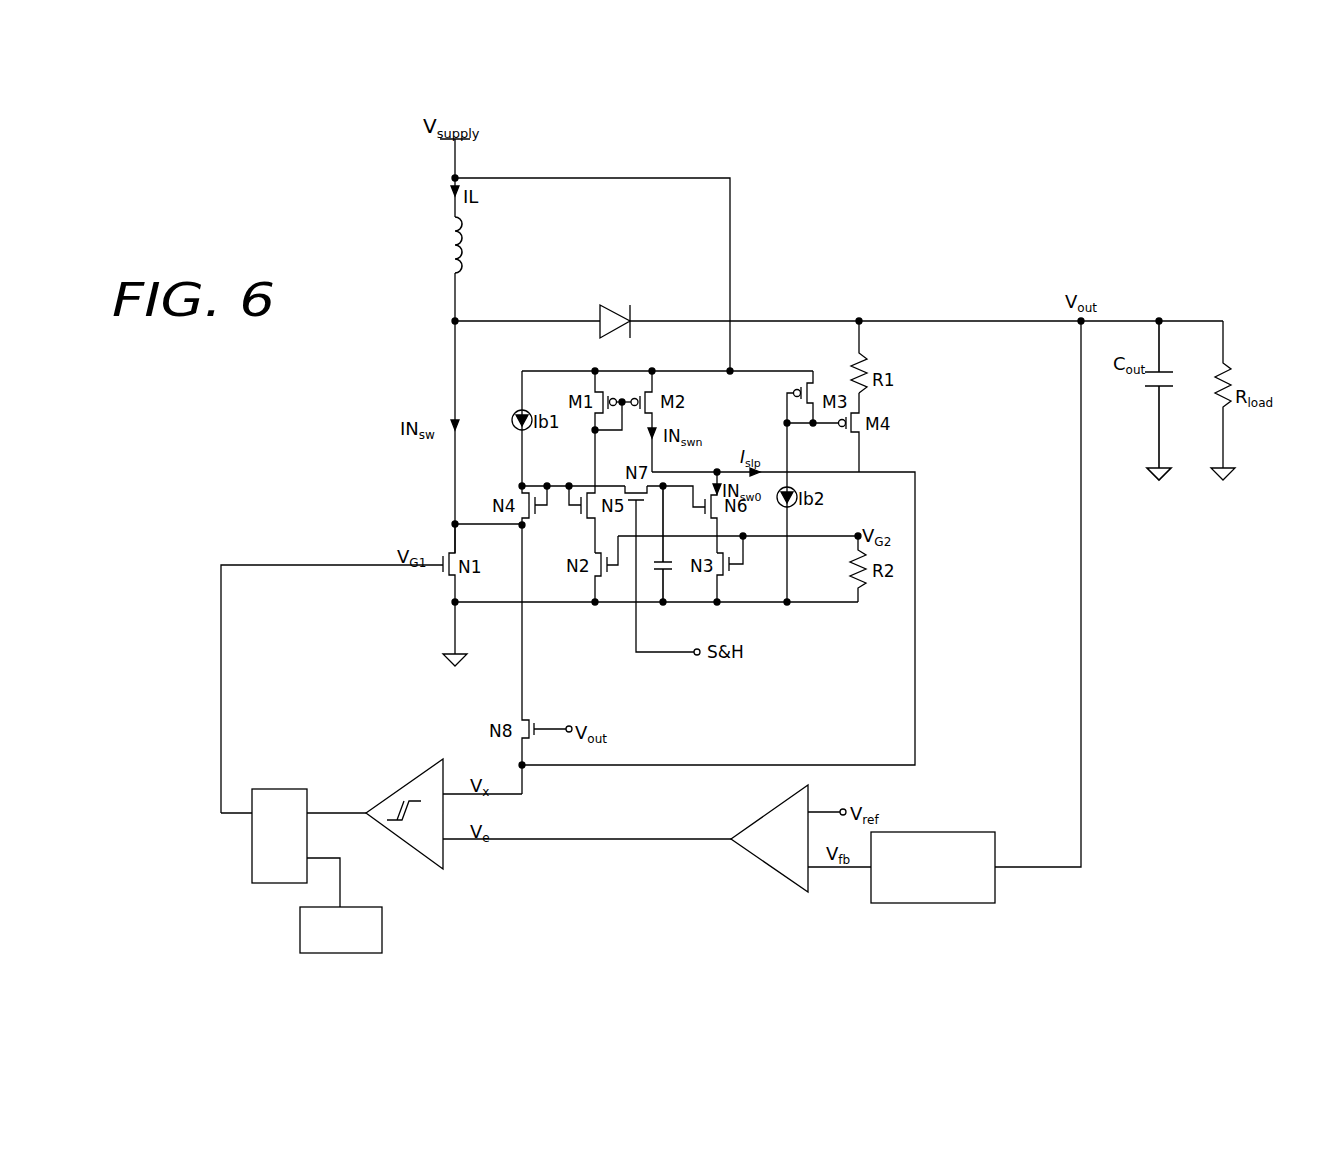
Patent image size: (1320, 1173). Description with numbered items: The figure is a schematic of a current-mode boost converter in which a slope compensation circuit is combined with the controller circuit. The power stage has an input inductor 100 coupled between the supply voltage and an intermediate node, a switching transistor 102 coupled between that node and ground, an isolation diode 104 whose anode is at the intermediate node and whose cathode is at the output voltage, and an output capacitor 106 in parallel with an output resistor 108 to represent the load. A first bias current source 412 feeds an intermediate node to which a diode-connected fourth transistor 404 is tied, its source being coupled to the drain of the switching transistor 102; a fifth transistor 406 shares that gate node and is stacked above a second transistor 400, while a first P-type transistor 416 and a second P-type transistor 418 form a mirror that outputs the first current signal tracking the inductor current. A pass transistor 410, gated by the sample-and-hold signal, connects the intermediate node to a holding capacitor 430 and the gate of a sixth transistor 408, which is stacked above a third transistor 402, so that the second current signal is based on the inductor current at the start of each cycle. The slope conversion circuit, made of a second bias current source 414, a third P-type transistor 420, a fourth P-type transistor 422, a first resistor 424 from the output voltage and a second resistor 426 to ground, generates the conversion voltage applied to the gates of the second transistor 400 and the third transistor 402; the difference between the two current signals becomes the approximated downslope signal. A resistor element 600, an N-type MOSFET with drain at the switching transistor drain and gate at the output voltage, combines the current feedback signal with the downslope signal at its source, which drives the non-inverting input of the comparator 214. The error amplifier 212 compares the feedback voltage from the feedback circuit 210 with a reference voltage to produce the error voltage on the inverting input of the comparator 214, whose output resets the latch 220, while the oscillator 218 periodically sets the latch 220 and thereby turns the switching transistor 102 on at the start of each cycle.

The input inductor 100 is at (469, 246).
The switching transistor 102 is at (451, 552).
The isolation diode 104 is at (613, 305).
The output capacitor 106 is at (1164, 388).
The output resistor 108 is at (1226, 360).
The feedback circuit 210 is at (930, 905).
The error amplifier 212 is at (768, 870).
The comparator 214 is at (441, 858).
The oscillator 218 is at (300, 932).
The latch 220 is at (280, 789).
The transistor N2 400 is at (600, 578).
The transistor N3 402 is at (724, 576).
The transistor N4 404 is at (525, 486).
The transistor N5 406 is at (588, 520).
The transistor N6 408 is at (714, 492).
The pass transistor 410 is at (626, 490).
The first bias current source 412 is at (512, 417).
The second bias current source 414 is at (795, 505).
The transistor M1 416 is at (600, 392).
The transistor M2 418 is at (649, 392).
The transistor M3 420 is at (812, 374).
The transistor M4 422 is at (851, 434).
The first resistor 424 is at (868, 365).
The second resistor 426 is at (859, 592).
The holding capacitor 430 is at (664, 570).
The resistor element 600 is at (524, 718).